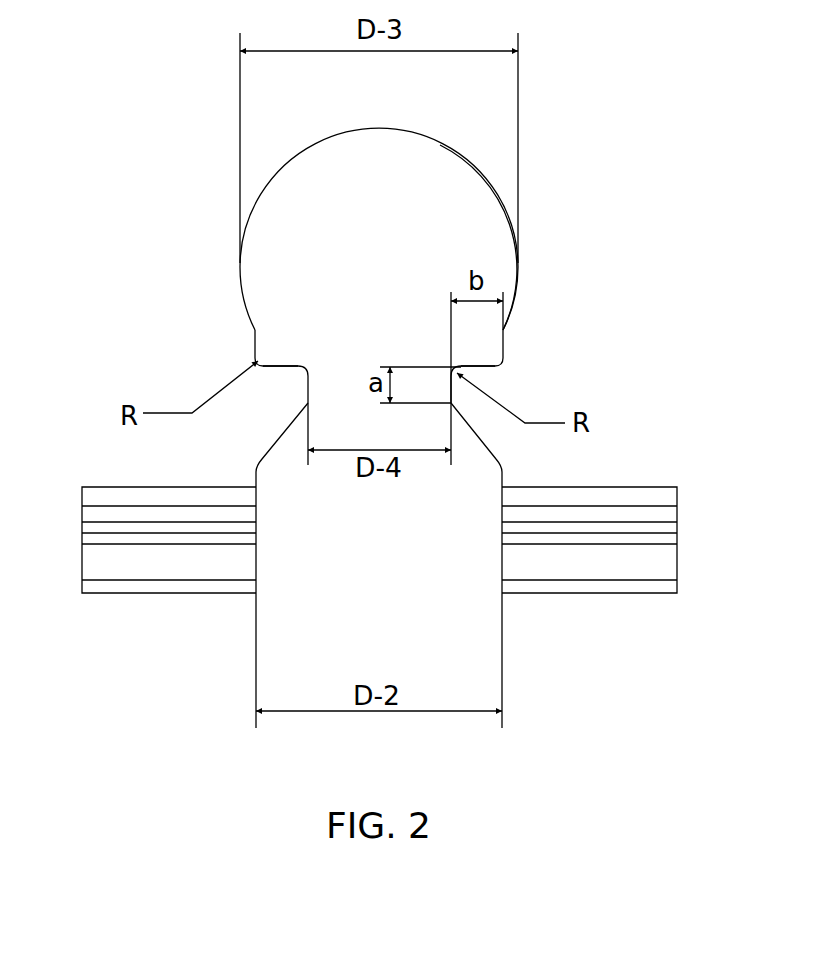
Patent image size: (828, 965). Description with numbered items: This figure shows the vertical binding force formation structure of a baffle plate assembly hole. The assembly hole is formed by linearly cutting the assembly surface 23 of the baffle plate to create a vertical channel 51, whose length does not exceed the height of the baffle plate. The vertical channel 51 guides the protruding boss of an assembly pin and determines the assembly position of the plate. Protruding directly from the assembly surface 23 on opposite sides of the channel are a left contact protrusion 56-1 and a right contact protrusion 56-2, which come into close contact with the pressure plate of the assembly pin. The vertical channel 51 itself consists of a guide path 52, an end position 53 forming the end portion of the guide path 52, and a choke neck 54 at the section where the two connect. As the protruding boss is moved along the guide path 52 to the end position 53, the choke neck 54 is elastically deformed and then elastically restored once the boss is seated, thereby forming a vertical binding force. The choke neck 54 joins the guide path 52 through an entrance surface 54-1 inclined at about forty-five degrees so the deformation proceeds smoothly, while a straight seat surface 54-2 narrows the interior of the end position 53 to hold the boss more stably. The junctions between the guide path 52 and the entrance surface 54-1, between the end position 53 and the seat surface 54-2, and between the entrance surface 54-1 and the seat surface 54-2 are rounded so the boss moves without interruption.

The assembly surface 23 is at (115, 155).
The vertical channel 51 is at (545, 163).
The guide path 52 is at (483, 667).
The end position 53 is at (457, 155).
The choke neck 54 is at (305, 367).
The entrance surface 54-1 is at (283, 432).
The seat surface 54-2 is at (275, 365).
The left contact protrusion 56-1 is at (139, 558).
The right contact protrusion 56-2 is at (612, 557).